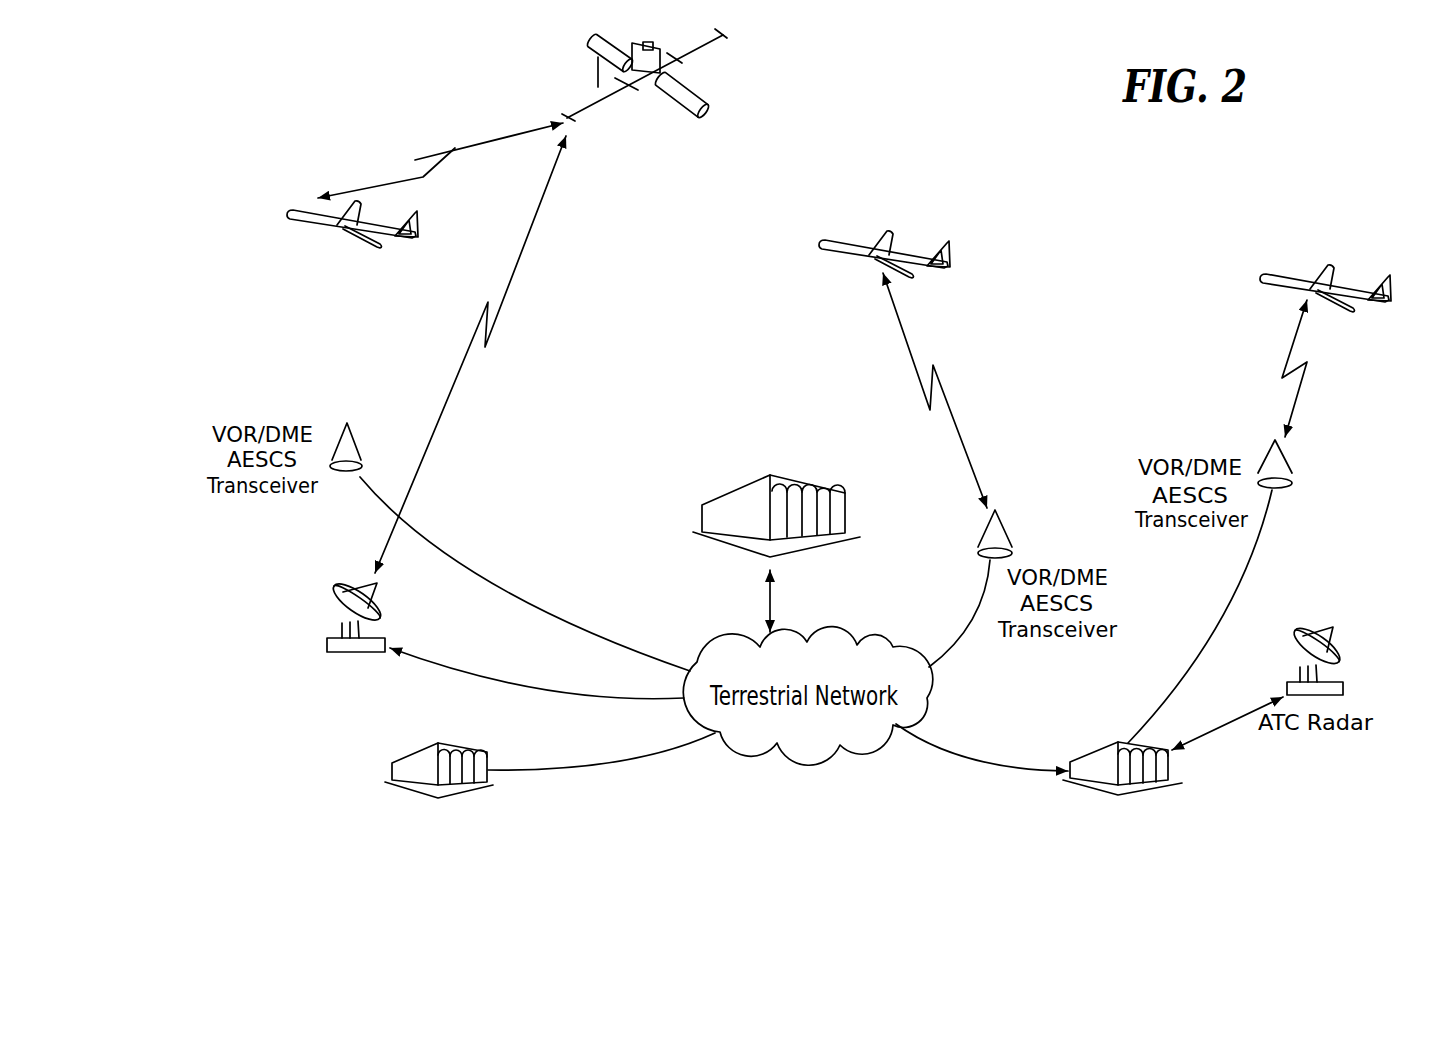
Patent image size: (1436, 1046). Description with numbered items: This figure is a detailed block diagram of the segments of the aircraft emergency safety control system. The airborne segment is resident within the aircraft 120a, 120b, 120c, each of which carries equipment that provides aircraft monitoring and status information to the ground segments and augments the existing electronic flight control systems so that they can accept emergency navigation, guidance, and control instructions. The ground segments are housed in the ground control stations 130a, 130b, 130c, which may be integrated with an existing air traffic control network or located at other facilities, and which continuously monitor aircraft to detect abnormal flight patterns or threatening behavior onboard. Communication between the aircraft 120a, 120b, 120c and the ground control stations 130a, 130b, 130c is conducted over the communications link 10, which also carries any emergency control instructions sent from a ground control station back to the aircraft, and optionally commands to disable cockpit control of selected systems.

The communications link 10 is at (415, 160).
The aircraft 120a is at (320, 228).
The aircraft 120b is at (845, 233).
The aircraft 120c is at (1295, 268).
The ground control station 130a is at (360, 654).
The ground control station 130b is at (420, 753).
The ground control station 130c is at (1100, 745).